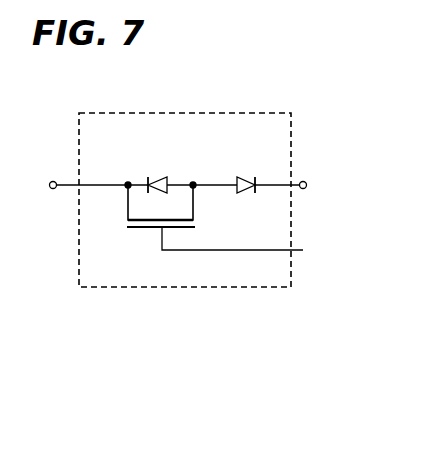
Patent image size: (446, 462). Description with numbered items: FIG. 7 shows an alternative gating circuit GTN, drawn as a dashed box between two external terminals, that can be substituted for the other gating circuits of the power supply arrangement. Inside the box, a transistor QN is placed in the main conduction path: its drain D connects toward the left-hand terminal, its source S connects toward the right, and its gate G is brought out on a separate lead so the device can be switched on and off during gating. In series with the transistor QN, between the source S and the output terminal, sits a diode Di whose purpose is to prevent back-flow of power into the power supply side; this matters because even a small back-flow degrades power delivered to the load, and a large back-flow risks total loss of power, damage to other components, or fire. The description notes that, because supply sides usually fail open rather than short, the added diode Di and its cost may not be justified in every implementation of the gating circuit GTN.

The gating circuit GTN is at (292, 145).
The MOS transistor QN is at (173, 179).
The diode Di is at (236, 177).
The drain terminal D is at (118, 171).
The source terminal S is at (207, 173).
The gate terminal G is at (144, 246).